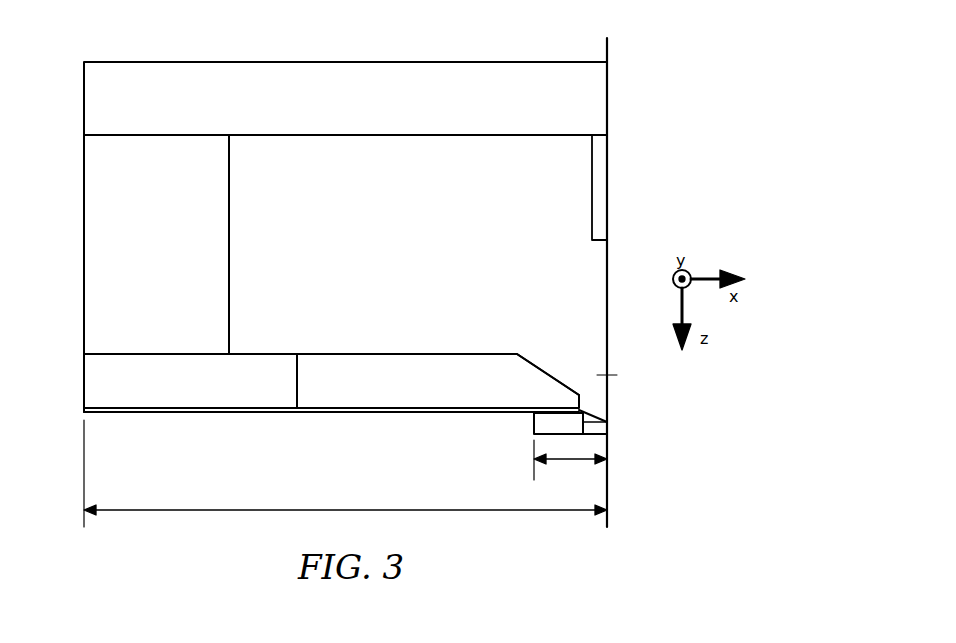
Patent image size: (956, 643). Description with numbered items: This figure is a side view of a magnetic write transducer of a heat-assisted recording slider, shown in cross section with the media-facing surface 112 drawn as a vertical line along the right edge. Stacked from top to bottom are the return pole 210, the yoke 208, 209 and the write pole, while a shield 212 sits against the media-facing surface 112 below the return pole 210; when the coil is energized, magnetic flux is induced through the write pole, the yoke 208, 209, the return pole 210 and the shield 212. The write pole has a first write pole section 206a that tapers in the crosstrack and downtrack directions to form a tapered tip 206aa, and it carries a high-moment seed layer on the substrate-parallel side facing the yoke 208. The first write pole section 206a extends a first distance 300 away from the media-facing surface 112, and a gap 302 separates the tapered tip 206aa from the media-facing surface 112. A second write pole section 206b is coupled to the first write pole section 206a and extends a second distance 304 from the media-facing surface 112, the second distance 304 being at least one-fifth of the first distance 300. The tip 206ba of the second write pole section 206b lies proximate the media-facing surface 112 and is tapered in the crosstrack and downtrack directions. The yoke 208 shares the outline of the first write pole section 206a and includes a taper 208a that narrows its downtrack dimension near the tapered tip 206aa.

The media-facing surface 112 is at (607, 52).
The return pole 210 is at (433, 135).
The yoke 209 is at (217, 205).
The shield 212 is at (603, 222).
The yoke 208 is at (435, 354).
The taper 208a is at (537, 365).
The first write pole section 206a is at (412, 413).
The tapered tip 206aa is at (588, 408).
The second write pole section 206b is at (533, 418).
The tip 206ba is at (597, 425).
The gap 302 is at (617, 375).
The first distance 300 is at (358, 508).
The second distance 304 is at (570, 465).